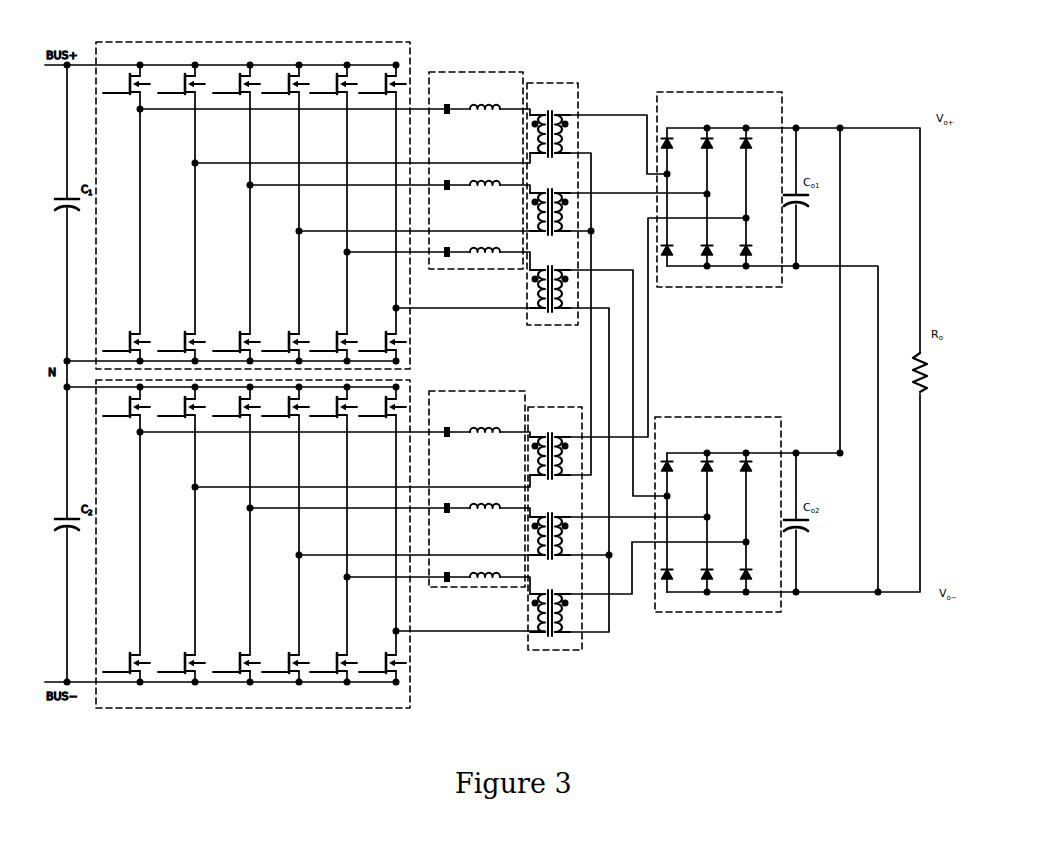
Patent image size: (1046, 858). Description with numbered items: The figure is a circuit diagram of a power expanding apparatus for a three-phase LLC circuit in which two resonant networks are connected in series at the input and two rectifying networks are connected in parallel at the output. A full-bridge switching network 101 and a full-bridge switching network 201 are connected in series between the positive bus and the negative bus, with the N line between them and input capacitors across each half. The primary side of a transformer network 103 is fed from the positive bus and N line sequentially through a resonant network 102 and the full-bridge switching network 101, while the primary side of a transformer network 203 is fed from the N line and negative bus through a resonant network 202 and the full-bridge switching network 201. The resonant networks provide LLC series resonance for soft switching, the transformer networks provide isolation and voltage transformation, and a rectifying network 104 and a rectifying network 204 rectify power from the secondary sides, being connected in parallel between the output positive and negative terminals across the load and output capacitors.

The full-bridge switching network 101 is at (97, 42).
The resonant network 102 is at (437, 72).
The transformer network 103 is at (530, 84).
The rectifying network 104 is at (677, 92).
The full-bridge switching network 201 is at (278, 708).
The resonant network 202 is at (478, 588).
The transformer network 203 is at (571, 650).
The rectifying network 204 is at (746, 612).